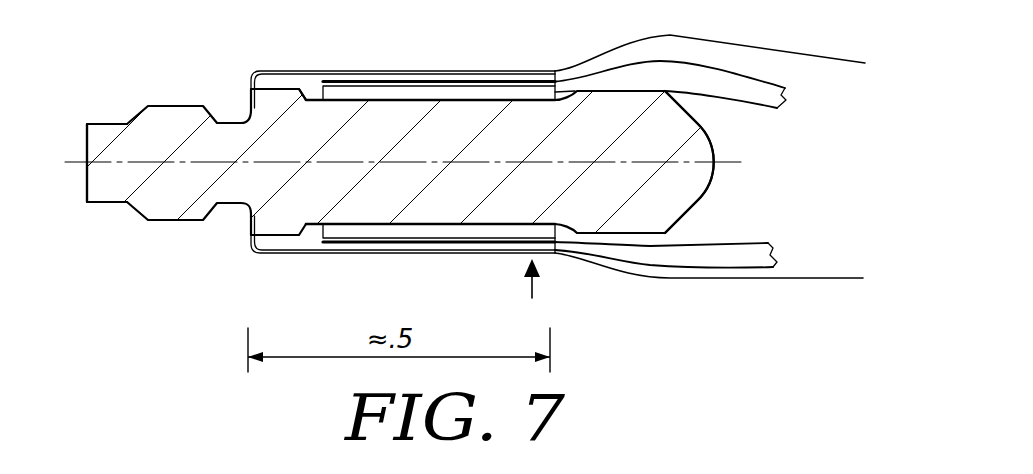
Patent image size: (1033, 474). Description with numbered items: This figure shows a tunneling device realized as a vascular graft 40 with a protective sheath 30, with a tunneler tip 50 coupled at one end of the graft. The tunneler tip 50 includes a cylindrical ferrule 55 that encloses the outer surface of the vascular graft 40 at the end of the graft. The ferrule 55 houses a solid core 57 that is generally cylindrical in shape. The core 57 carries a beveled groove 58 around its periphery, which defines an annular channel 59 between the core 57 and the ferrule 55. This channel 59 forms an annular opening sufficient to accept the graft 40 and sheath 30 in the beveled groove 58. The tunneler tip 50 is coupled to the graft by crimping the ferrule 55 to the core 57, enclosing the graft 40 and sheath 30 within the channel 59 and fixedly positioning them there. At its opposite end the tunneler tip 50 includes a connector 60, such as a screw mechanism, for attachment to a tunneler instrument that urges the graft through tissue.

The sheath 30 is at (732, 41).
The vascular graft 40 is at (775, 88).
The tunneler tip 50 is at (140, 83).
The cylindrical ferrule 55 is at (383, 70).
The solid core 57 is at (711, 193).
The beveled groove 58 is at (471, 101).
The annular channel 59 is at (313, 98).
The connector 60 is at (113, 203).